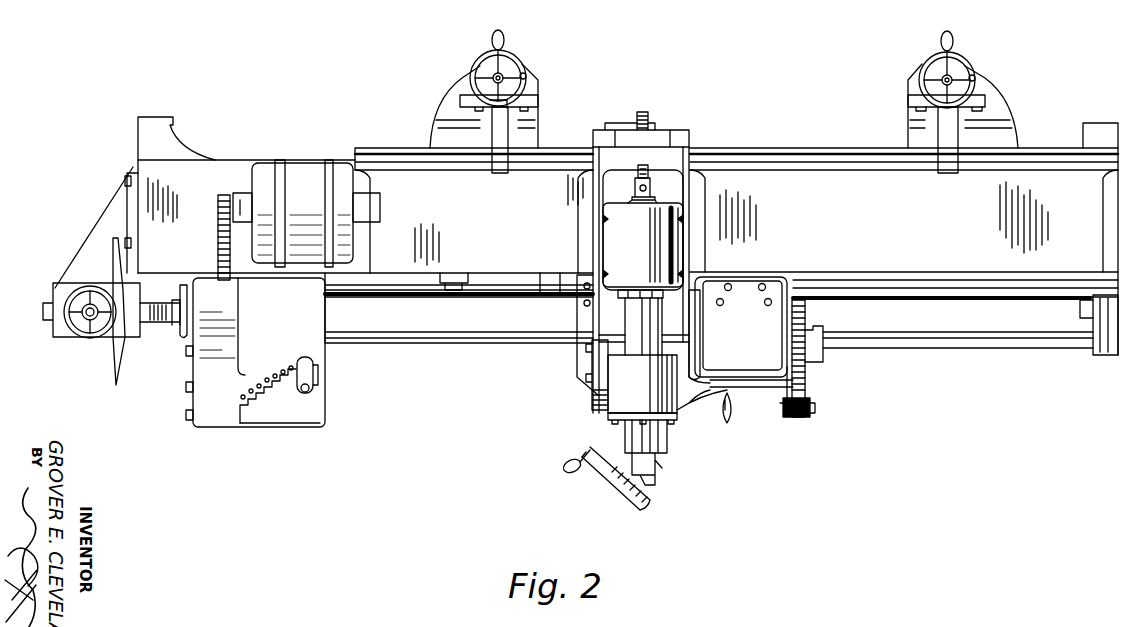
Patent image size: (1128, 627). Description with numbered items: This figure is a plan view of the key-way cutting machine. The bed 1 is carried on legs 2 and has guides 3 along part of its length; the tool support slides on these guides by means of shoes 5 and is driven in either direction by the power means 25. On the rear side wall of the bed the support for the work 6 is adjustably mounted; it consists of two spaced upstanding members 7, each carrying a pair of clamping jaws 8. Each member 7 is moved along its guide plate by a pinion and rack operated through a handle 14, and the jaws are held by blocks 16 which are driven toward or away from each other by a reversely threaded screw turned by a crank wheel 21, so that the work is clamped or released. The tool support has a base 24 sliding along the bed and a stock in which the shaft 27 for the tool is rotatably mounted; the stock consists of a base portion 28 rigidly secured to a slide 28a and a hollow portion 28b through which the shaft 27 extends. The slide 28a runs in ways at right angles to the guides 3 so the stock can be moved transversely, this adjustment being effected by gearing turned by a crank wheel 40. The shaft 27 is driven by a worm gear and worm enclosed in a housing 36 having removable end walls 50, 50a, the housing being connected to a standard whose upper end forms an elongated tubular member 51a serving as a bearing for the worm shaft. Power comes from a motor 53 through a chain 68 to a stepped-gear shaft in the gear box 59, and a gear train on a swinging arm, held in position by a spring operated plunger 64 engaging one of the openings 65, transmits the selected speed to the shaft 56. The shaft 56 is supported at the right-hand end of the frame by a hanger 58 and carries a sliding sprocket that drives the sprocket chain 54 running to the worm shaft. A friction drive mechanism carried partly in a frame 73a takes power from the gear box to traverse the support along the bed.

The bed 1 is at (628, 239).
The legs 2 is at (170, 152).
The guides 3 is at (840, 165).
The shoes 5 is at (725, 150).
The support for the work 6 is at (935, 190).
The upstanding member 7 is at (528, 135).
The clamping jaws 8 is at (500, 173).
The handle 14 is at (502, 42).
The upper block 16 is at (500, 112).
The crank wheel 21 is at (525, 68).
The base 24 is at (585, 360).
The power means 25 is at (741, 350).
The shaft 27 is at (632, 315).
The base portion 28 is at (600, 180).
The slide 28a is at (615, 308).
The hollow portion 28b is at (643, 245).
The housing 36 is at (667, 397).
The crank wheel 40 is at (645, 505).
The removable end wall 50 is at (590, 395).
The removable end wall 50a is at (608, 418).
The elongated tubular member 51a is at (765, 378).
The motor 53 is at (298, 168).
The sprocket chain 54 is at (808, 372).
The shaft 56 is at (983, 348).
The hanger 58 is at (1100, 360).
The gear box 59 is at (217, 420).
The spring operated plunger 64 is at (305, 398).
The openings 65 is at (262, 378).
The chain 68 is at (216, 250).
The frame 73a is at (68, 340).